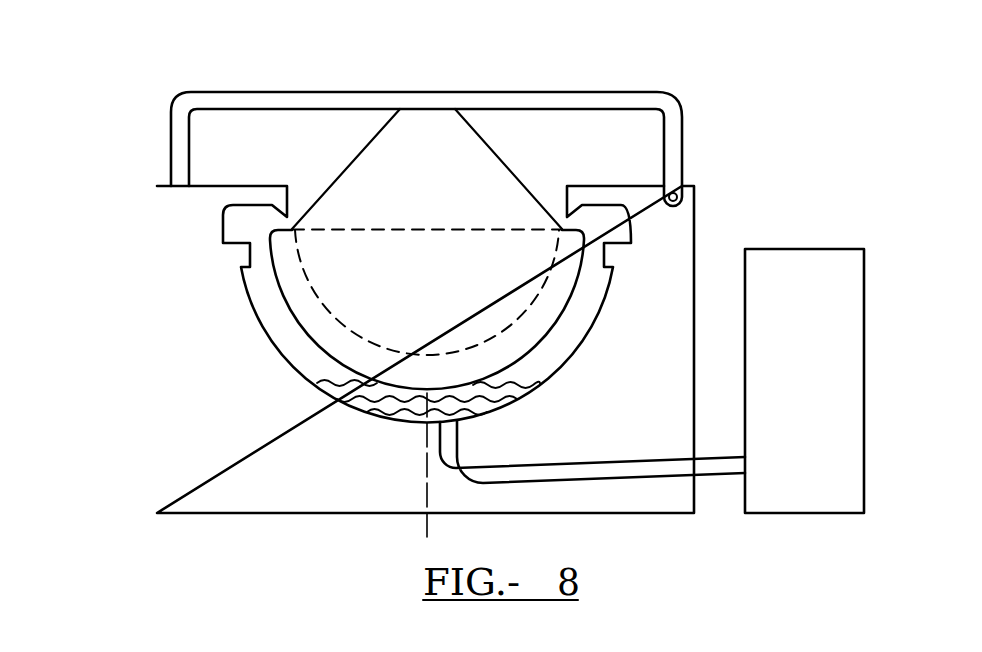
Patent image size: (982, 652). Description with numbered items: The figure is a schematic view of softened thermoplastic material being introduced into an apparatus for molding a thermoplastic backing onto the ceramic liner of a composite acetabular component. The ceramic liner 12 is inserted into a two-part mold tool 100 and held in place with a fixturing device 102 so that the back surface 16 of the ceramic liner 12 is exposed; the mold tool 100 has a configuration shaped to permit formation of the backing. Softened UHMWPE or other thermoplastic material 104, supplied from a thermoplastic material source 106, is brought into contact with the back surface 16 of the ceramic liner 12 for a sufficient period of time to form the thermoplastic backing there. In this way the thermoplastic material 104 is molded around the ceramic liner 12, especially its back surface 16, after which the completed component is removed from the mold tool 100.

The mold tool 100 is at (116, 348).
The fixturing device 102 is at (575, 102).
The ceramic liner 12 is at (268, 312).
The back surface 16 is at (309, 342).
The softened thermoplastic material 104 is at (358, 392).
The thermoplastic material source 106 is at (832, 401).